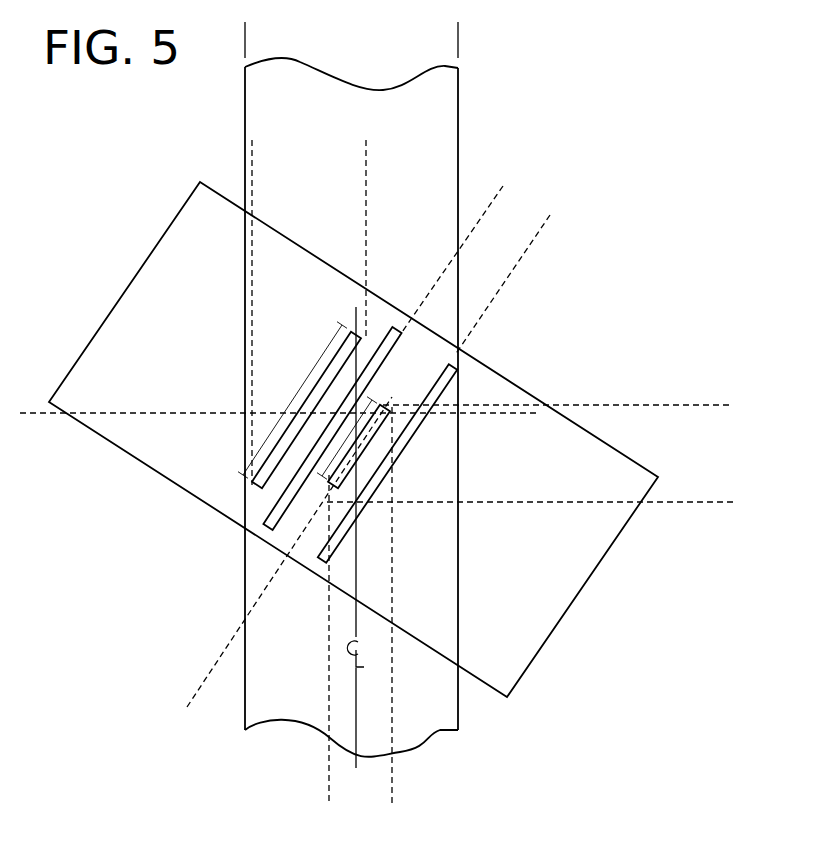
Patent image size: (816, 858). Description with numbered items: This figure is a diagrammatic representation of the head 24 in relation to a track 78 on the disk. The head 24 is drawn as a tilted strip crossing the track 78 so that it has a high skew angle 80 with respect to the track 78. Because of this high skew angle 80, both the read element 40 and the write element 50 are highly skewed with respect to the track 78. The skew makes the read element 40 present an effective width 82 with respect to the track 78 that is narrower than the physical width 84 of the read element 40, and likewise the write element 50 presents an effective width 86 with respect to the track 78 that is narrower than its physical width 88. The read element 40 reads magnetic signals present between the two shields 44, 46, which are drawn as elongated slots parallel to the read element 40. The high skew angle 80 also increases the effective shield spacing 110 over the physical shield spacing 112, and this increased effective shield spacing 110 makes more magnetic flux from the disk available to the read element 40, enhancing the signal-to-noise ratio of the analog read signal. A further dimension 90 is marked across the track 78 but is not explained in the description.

The head 24 is at (528, 392).
The track 78 is at (458, 130).
The read element 40 is at (387, 472).
The shield 44 is at (398, 328).
The shield 46 is at (413, 433).
The write element 50 is at (263, 488).
The high skew angle 80 is at (25, 413).
The effective width 82 is at (392, 792).
The physical width 84 is at (325, 460).
The effective width 86 is at (252, 150).
The physical width 88 is at (284, 407).
The strip width 90 is at (458, 32).
The effective shield spacing 110 is at (722, 405).
The physical shield spacing 112 is at (498, 194).